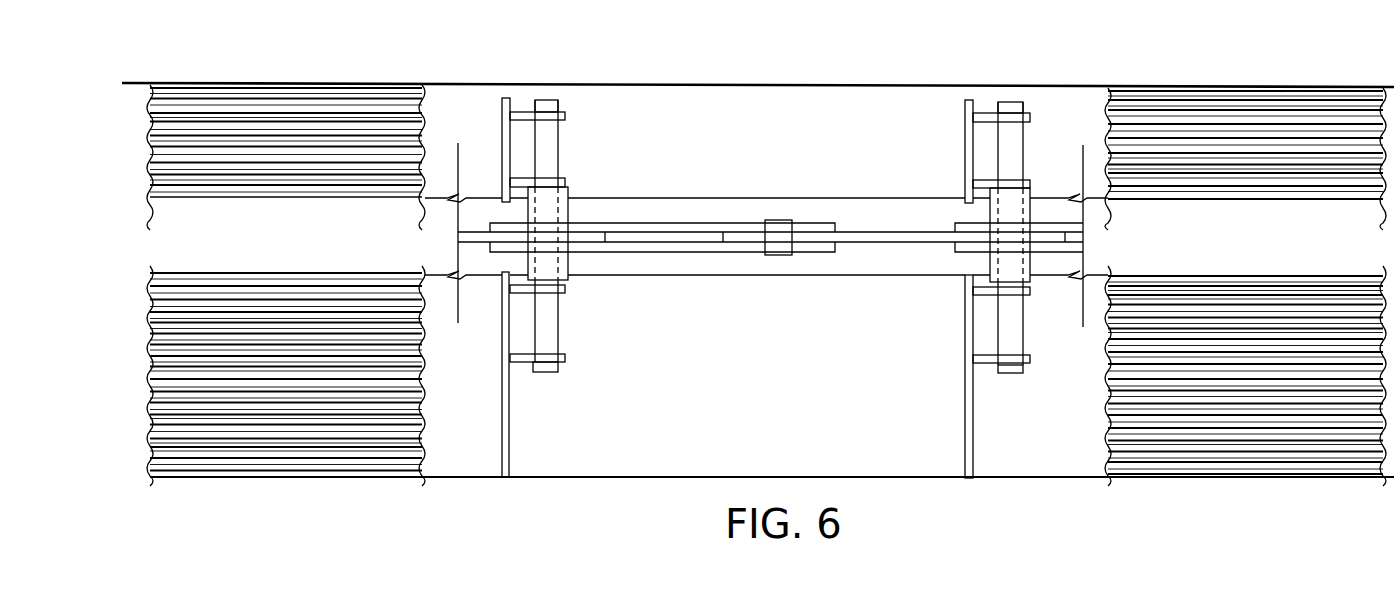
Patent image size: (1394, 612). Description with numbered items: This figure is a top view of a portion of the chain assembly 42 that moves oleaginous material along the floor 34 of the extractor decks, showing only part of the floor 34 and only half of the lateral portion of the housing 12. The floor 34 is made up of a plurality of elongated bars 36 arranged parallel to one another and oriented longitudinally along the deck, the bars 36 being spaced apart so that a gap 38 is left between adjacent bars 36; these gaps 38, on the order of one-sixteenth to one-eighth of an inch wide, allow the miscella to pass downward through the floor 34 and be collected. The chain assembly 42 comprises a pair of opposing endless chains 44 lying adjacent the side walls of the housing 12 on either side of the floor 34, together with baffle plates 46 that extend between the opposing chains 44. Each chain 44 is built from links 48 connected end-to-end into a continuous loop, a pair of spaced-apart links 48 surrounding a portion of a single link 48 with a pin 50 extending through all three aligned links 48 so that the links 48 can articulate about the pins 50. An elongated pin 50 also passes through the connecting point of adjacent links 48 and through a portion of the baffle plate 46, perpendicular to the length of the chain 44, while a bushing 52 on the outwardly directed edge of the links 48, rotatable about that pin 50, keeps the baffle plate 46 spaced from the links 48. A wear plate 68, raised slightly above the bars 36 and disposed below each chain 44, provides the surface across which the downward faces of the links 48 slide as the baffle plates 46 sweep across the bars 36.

The housing 12 is at (318, 82).
The floor 34 is at (250, 101).
The elongated bars 36 is at (1245, 138).
The gap 38 is at (1302, 122).
The chain assembly 42 is at (766, 264).
The endless chain 44 is at (770, 244).
The baffle plate 46 is at (503, 130).
The link 48 is at (673, 247).
The pin 50 is at (548, 330).
The bushing 52 is at (545, 208).
The wear plate 68 is at (180, 217).